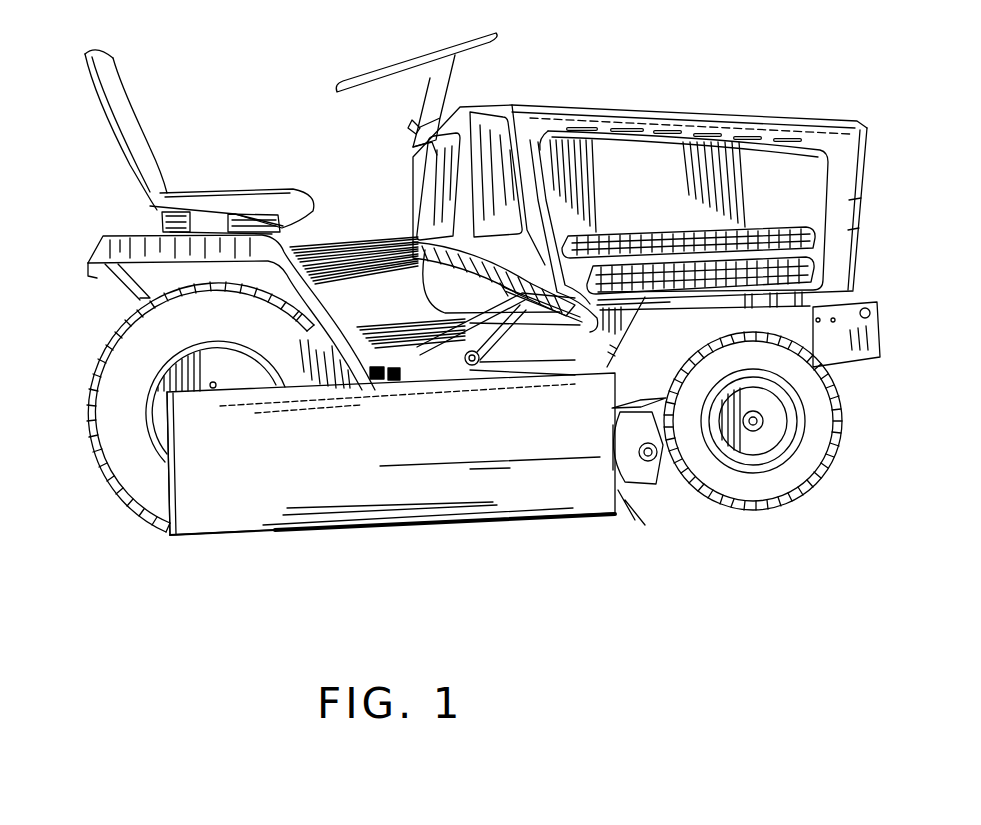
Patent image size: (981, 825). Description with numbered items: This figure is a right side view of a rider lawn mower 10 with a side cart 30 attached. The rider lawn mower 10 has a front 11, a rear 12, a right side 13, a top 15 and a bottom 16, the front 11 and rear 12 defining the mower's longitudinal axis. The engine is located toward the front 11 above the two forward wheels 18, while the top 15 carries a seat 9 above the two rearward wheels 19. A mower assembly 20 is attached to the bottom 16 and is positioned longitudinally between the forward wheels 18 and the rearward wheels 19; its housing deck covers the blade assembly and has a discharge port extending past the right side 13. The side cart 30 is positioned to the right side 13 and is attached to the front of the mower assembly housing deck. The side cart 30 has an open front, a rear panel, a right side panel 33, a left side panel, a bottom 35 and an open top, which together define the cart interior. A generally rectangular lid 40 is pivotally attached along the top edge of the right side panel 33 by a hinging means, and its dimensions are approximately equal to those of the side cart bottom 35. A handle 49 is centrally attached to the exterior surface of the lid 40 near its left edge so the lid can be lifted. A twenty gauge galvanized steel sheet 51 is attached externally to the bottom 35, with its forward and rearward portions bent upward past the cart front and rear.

The seat 9 is at (135, 88).
The rider lawn mower 10 is at (555, 107).
The front 11 is at (865, 220).
The rear 12 is at (87, 263).
The right side 13 is at (640, 187).
The top 15 is at (726, 198).
The bottom 16 is at (853, 363).
The forward wheels 18 is at (813, 462).
The rearward wheels 19 is at (113, 400).
The mower assembly 20 is at (622, 482).
The side cart 30 is at (391, 489).
The right side panel 33 is at (345, 468).
The bottom 35 is at (302, 533).
The lid 40 is at (293, 387).
The handle 49 is at (395, 380).
The galvanized steel sheet 51 is at (230, 540).